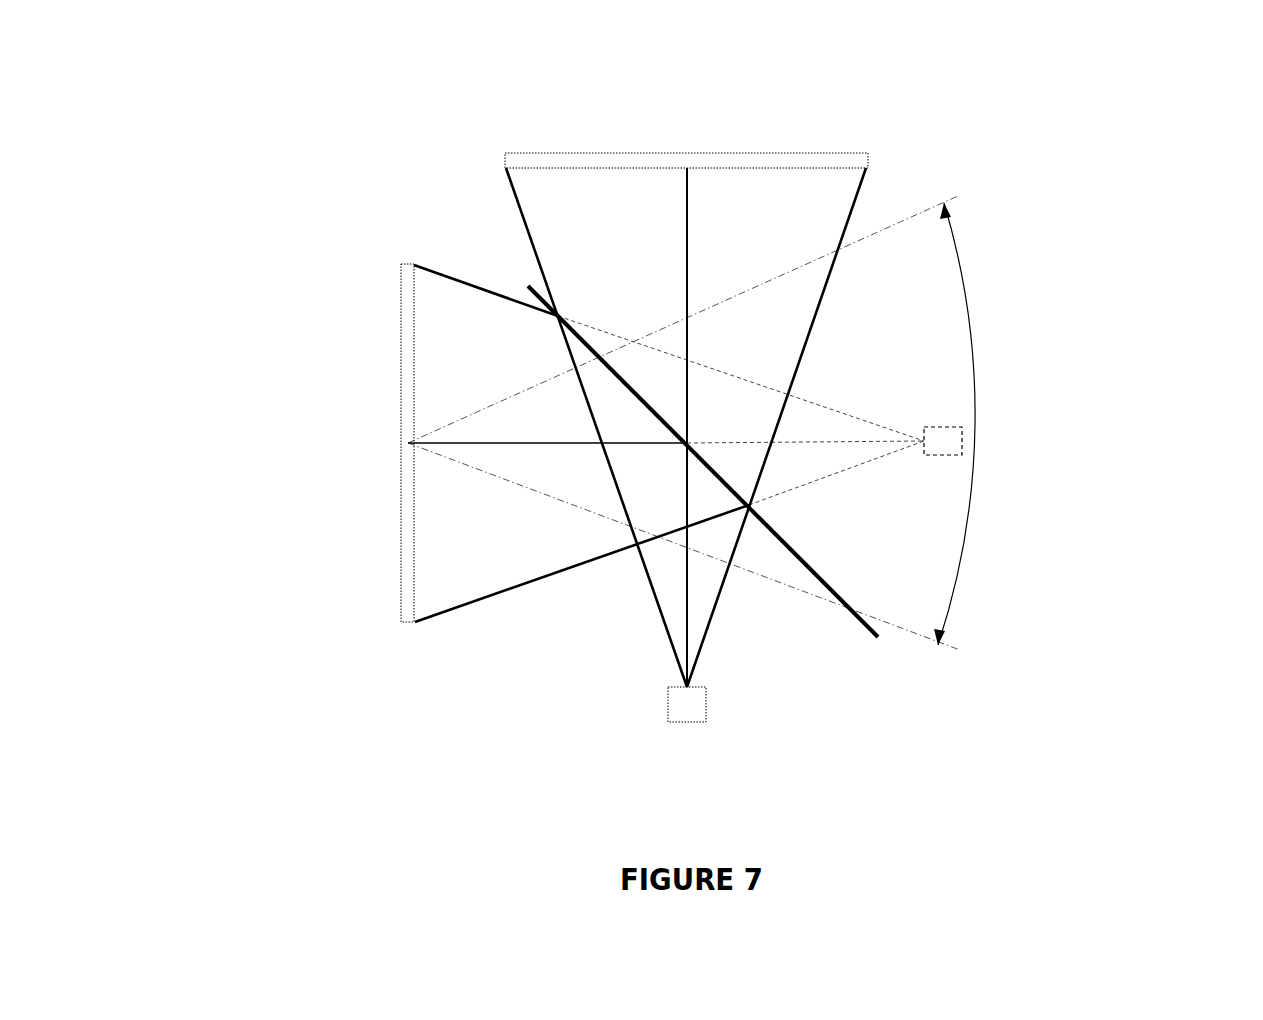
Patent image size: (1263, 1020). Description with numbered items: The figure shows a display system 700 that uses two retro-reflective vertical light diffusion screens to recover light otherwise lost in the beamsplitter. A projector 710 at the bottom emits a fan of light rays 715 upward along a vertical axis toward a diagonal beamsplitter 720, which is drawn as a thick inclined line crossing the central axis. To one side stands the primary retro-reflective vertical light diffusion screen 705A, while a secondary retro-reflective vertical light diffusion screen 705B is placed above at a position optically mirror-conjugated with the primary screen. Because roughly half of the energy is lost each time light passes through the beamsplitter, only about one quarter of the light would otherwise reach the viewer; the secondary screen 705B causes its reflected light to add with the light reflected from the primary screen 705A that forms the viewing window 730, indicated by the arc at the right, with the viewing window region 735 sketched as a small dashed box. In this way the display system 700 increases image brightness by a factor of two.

The display system 700 is at (665, 61).
The retro-reflective vertical light diffusion screen 705A is at (398, 619).
The secondary retro-reflective vertical light diffusion screen 705B is at (823, 157).
The projector 710 is at (688, 722).
The projected light rays 715 is at (703, 648).
The beamsplitter 720 is at (872, 638).
The viewing window 730 is at (964, 562).
The viewing window 735 is at (930, 456).